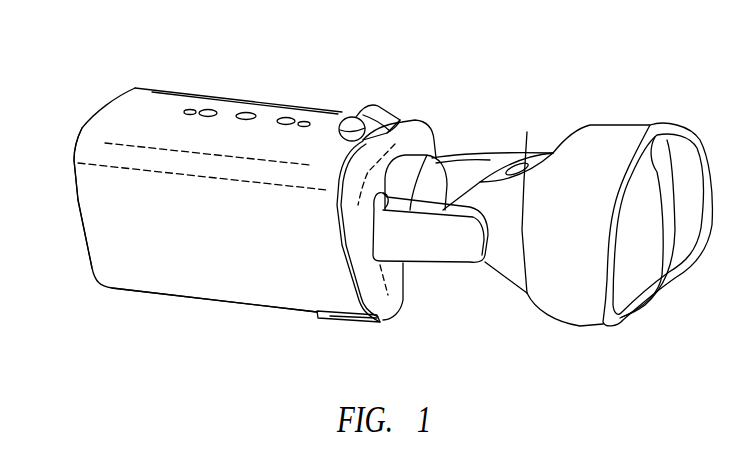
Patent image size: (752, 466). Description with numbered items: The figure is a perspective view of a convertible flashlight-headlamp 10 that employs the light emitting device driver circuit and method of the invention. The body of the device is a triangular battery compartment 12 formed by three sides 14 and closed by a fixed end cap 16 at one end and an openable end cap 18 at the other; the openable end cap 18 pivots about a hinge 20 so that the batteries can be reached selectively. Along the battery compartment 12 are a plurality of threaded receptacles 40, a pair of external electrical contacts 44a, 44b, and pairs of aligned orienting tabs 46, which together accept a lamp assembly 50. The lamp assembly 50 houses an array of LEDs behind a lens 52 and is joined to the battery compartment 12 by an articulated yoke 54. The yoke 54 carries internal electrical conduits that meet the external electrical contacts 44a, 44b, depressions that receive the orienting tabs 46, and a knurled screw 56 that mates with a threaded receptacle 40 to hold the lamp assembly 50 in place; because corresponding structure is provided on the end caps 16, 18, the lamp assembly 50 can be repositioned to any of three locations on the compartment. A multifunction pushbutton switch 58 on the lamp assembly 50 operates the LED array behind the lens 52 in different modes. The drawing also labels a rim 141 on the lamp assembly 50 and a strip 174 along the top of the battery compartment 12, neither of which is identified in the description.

The convertible flashlight-headlamp 10 is at (92, 58).
The triangular battery compartment 12 is at (193, 287).
The side 14 is at (303, 274).
The fixed end cap 16 is at (83, 227).
The openable end cap 18 is at (400, 292).
The hinge 20 is at (380, 115).
The threaded receptacle 40 is at (247, 113).
The external electrical contact 44a is at (210, 112).
The external electrical contact 44b is at (288, 118).
The orienting tab 46 is at (197, 110).
The lamp assembly 50 is at (547, 307).
The lens 52 is at (633, 273).
The articulated yoke 54 is at (447, 267).
The knurled screw 56 is at (434, 158).
The multifunction pushbutton switch 58 is at (520, 163).
The eyecup rim 141 is at (645, 130).
The accessory rail 174 is at (173, 92).